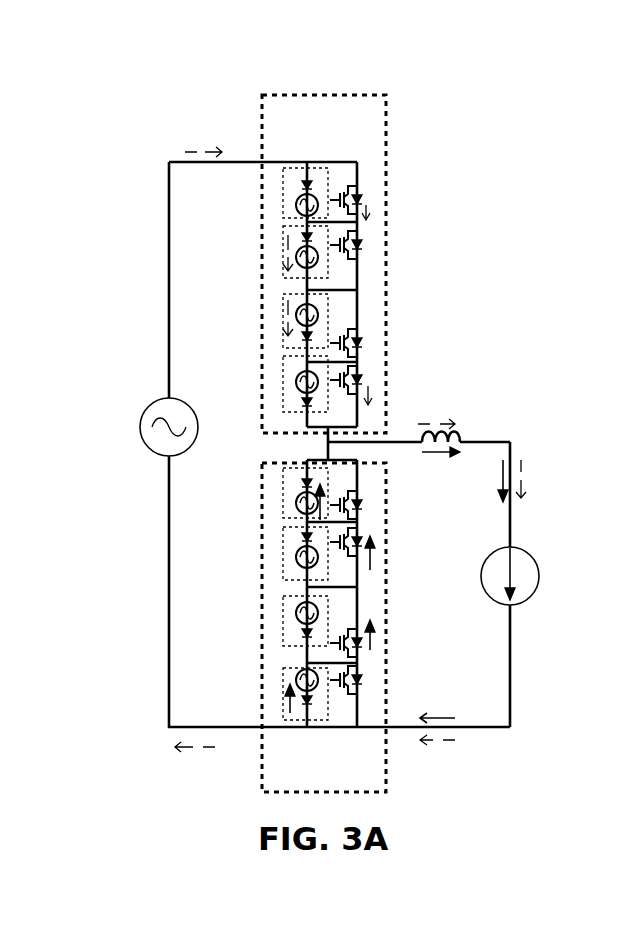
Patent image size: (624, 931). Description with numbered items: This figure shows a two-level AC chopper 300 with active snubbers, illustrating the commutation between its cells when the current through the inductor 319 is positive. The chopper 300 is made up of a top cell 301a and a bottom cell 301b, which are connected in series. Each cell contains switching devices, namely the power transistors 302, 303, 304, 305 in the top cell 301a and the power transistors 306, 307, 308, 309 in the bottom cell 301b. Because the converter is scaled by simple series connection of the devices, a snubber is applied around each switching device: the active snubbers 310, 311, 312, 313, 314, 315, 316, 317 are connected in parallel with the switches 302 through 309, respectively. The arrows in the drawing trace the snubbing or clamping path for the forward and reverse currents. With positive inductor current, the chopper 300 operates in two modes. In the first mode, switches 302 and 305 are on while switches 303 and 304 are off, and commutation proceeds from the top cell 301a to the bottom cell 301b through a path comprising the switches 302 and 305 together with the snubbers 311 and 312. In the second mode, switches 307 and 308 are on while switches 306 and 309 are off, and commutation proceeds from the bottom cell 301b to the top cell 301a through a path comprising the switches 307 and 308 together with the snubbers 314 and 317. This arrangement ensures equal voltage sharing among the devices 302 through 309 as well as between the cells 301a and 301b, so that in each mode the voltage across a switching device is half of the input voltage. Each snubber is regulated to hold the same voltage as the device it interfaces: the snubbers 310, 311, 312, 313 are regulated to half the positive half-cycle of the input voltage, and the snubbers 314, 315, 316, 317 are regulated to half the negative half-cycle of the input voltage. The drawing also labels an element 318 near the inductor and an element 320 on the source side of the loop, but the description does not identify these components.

The two-level AC chopper 300 is at (196, 90).
The top cell 301a is at (343, 123).
The bottom cell 301b is at (343, 773).
The switch 302 is at (362, 200).
The switch 303 is at (362, 245).
The switch 304 is at (362, 343).
The switch 305 is at (362, 380).
The switch 306 is at (362, 505).
The switch 307 is at (362, 542).
The switch 308 is at (362, 643).
The switch 309 is at (362, 680).
The active snubber 310 is at (283, 200).
The active snubber 311 is at (283, 242).
The active snubber 312 is at (283, 326).
The active snubber 313 is at (283, 368).
The active snubber 314 is at (283, 484).
The active snubber 315 is at (283, 541).
The active snubber 316 is at (283, 624).
The active snubber 317 is at (283, 682).
The inductor 318 is at (460, 432).
The inductor 319 is at (539, 578).
The AC voltage source 320 is at (141, 418).